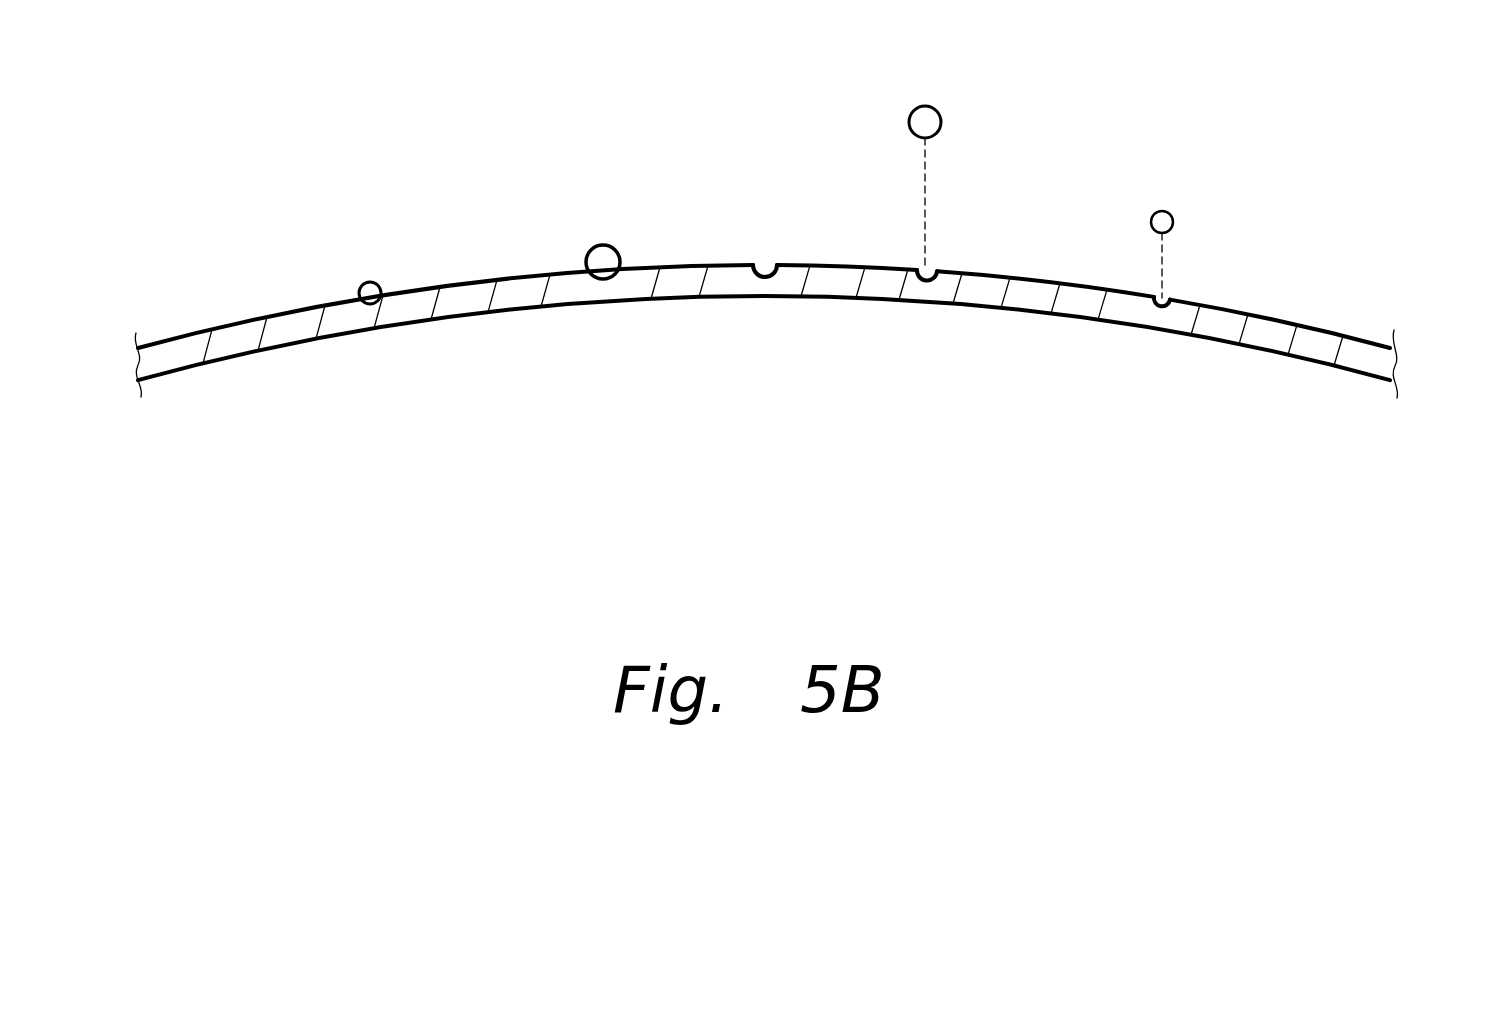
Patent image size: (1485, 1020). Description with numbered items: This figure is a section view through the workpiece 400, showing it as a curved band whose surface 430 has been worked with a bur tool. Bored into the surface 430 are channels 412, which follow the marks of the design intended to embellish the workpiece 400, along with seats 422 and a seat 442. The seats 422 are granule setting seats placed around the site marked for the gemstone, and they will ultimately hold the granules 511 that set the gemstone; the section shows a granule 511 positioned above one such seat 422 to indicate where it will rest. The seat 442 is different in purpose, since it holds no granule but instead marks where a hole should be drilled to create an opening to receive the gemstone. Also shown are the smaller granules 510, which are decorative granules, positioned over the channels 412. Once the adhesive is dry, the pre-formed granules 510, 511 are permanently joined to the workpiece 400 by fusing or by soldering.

The workpiece 400 is at (1270, 276).
The surface 430 is at (250, 322).
The granules 510 is at (372, 282).
The granules 511 is at (613, 247).
The channels 412 is at (378, 302).
The seats 422 is at (595, 278).
The seat 442 is at (755, 277).